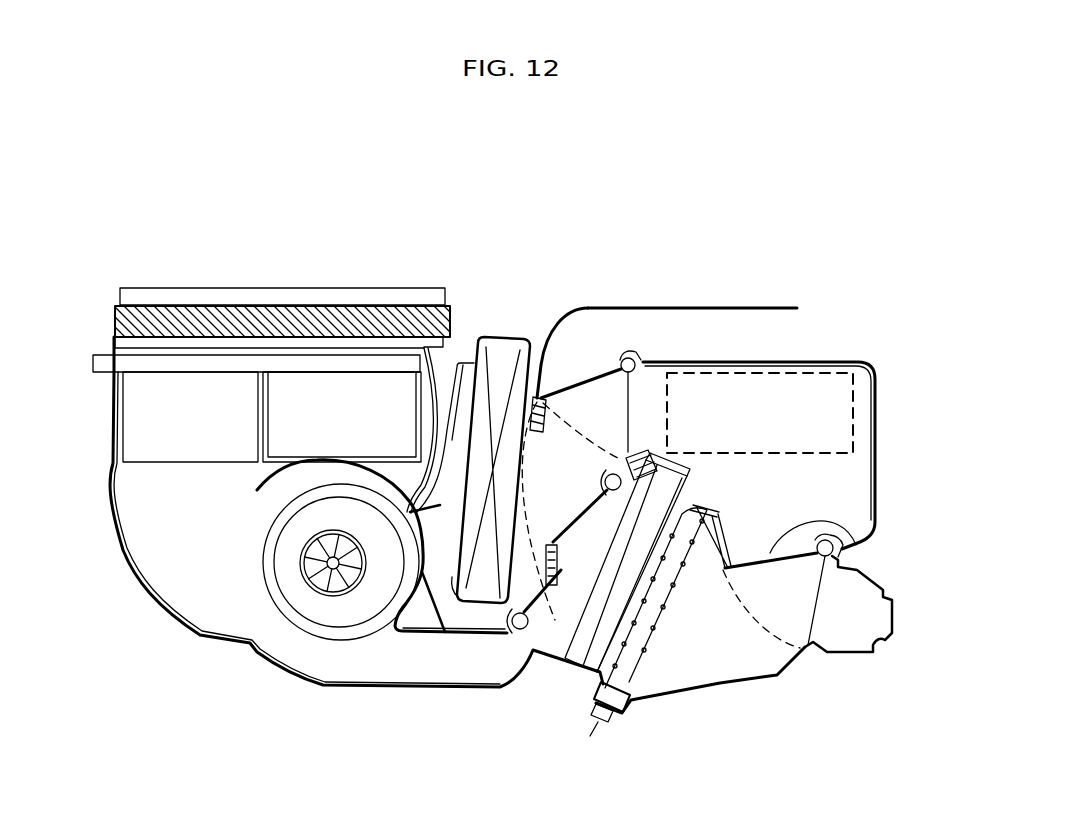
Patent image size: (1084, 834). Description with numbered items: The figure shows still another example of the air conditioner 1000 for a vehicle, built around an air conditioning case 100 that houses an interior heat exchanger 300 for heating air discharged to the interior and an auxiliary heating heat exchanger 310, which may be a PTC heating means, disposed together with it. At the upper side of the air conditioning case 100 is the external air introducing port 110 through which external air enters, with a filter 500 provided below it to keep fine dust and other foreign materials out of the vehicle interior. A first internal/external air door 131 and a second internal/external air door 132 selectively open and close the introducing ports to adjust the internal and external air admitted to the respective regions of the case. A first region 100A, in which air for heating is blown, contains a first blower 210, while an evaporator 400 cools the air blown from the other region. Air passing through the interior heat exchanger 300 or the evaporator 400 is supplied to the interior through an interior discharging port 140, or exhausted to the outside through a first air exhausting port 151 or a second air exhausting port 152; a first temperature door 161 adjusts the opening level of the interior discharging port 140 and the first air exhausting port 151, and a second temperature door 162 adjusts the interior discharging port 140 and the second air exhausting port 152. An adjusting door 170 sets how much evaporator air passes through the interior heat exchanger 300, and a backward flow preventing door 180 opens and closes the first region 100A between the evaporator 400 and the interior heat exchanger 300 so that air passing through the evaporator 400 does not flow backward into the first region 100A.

The air conditioner for a vehicle 1000 is at (802, 186).
The air conditioning case 100 is at (688, 306).
The first region 100A is at (227, 583).
The external air introducing port 110 is at (163, 294).
The filter 500 is at (190, 315).
The first internal/external air door 131 is at (145, 417).
The second internal/external air door 132 is at (353, 388).
The interior discharging port 140 is at (853, 413).
The first air exhausting port 151 is at (847, 648).
The second air exhausting port 152 is at (776, 347).
The first temperature door 161 is at (845, 548).
The second temperature door 162 is at (575, 390).
The adjusting door 170 is at (518, 350).
The backward flow preventing door 180 is at (521, 630).
The first blower 210 is at (307, 603).
The interior heat exchanger 300 is at (580, 670).
The auxiliary heating heat exchanger 310 is at (634, 670).
The evaporator 400 is at (482, 590).